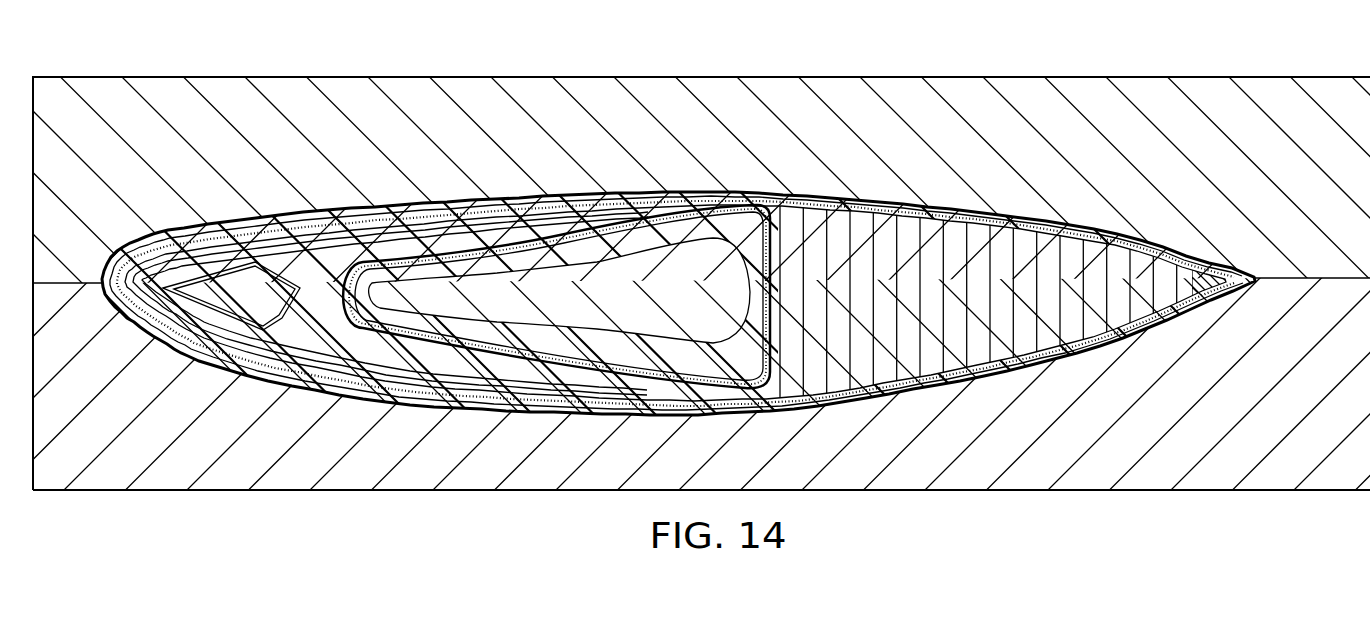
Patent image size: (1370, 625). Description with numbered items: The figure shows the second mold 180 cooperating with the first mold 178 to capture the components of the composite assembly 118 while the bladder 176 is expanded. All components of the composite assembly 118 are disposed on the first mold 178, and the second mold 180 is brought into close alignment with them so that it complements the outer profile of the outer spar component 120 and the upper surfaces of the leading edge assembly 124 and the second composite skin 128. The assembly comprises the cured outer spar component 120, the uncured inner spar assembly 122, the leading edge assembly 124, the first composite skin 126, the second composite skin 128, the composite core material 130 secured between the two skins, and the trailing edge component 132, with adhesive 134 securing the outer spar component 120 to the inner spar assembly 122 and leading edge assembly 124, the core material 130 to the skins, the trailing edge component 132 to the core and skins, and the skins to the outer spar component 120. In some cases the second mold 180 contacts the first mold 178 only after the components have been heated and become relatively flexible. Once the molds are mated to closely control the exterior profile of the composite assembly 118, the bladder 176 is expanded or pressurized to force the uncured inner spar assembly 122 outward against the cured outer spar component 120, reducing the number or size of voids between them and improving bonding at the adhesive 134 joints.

The composite assembly 118 is at (1101, 161).
The outer spar component 120 is at (690, 193).
The inner spar assembly 122 is at (360, 226).
The leading edge assembly 124 is at (222, 214).
The first composite skin 126 is at (943, 383).
The second composite skin 128 is at (957, 200).
The composite core material 130 is at (1045, 232).
The trailing edge component 132 is at (1238, 268).
The adhesive 134 is at (1117, 238).
The bladder 176 is at (742, 287).
The first mold 178 is at (226, 493).
The second mold 180 is at (227, 89).